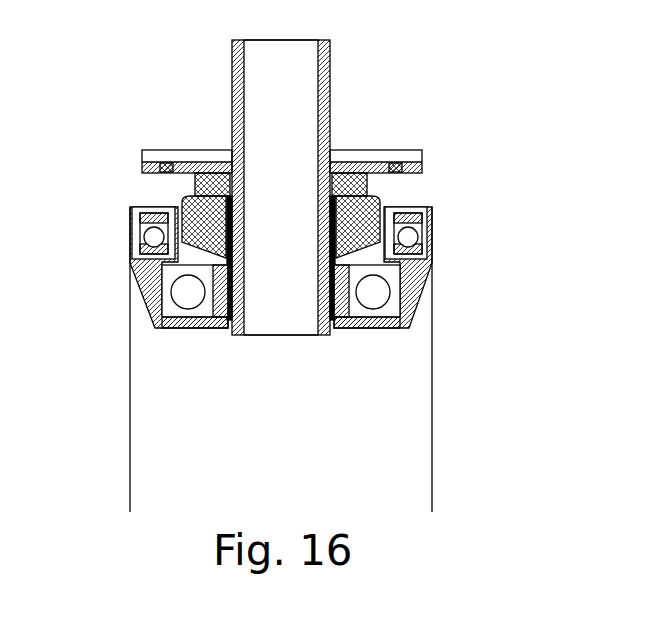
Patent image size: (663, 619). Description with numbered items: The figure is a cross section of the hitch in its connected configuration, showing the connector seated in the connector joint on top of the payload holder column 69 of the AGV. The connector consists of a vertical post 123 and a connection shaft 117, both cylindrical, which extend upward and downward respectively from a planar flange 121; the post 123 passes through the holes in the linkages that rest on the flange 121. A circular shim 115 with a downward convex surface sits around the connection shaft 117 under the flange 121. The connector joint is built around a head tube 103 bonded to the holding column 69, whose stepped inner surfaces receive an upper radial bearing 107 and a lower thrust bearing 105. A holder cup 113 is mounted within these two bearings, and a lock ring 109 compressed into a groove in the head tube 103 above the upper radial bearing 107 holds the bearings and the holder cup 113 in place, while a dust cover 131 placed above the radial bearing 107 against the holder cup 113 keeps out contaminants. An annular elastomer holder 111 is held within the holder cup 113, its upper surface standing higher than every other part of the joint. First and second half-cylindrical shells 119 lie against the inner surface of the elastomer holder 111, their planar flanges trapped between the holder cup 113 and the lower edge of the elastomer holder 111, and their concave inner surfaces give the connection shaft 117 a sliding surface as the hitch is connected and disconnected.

The payload holder column 69 is at (143, 455).
The head tube 103 is at (428, 262).
The lower thrust bearing 105 is at (372, 292).
The upper radial bearing 107 is at (146, 238).
The lock ring 109 is at (427, 218).
The annular elastomer holder 111 is at (203, 223).
The holder cup 113 is at (217, 330).
The circular shim 115 is at (365, 181).
The connection shaft 117 is at (327, 340).
The shell 119 is at (228, 338).
The flange 121 is at (191, 173).
The vertical post 123 is at (330, 88).
The dust cover 131 is at (178, 214).